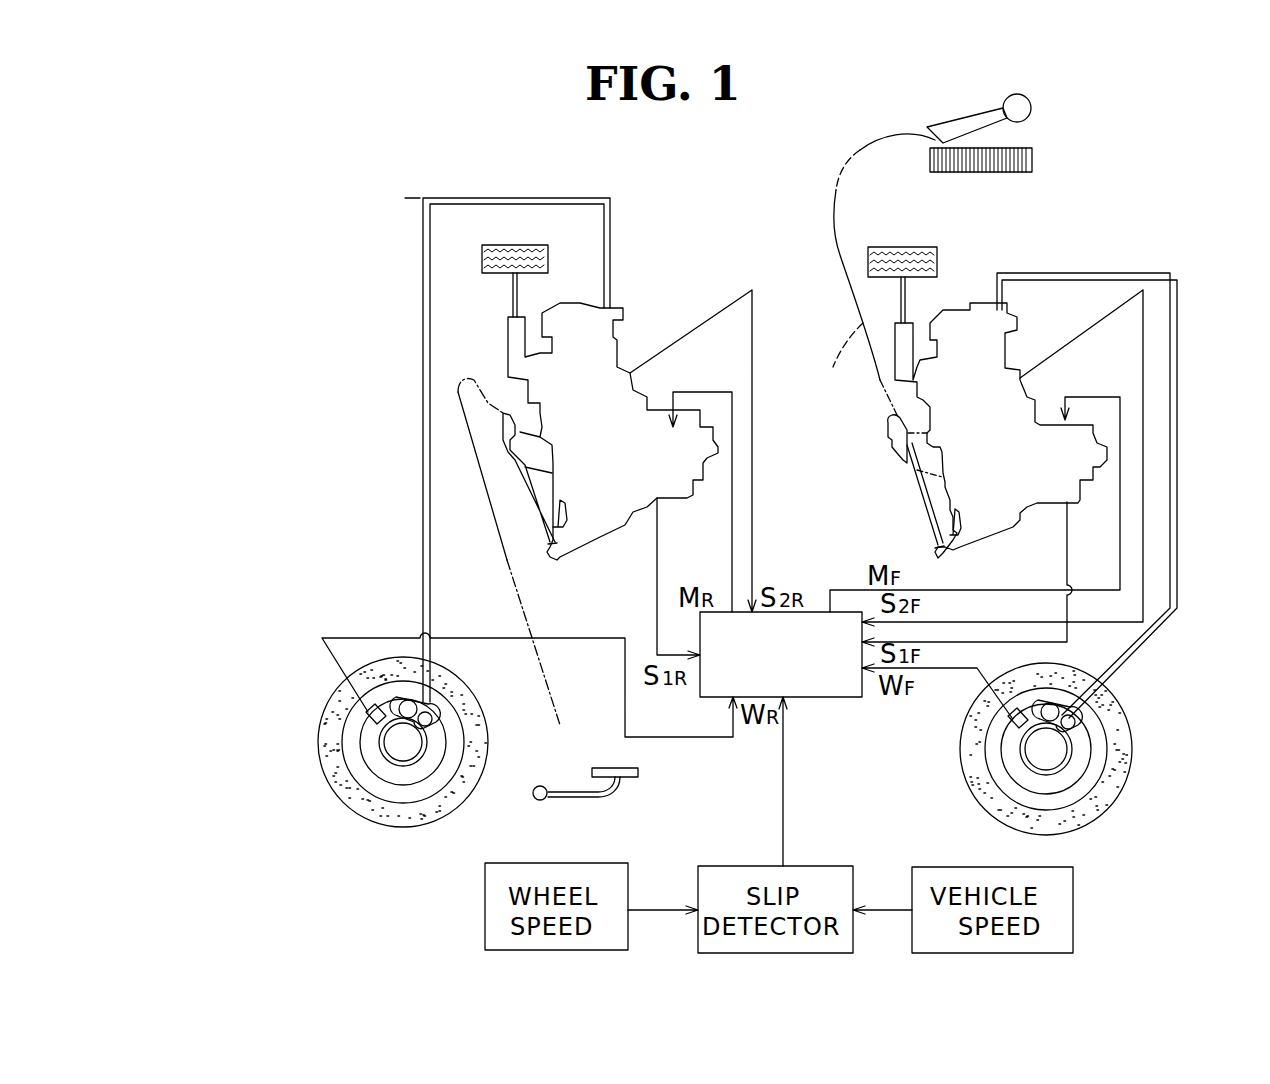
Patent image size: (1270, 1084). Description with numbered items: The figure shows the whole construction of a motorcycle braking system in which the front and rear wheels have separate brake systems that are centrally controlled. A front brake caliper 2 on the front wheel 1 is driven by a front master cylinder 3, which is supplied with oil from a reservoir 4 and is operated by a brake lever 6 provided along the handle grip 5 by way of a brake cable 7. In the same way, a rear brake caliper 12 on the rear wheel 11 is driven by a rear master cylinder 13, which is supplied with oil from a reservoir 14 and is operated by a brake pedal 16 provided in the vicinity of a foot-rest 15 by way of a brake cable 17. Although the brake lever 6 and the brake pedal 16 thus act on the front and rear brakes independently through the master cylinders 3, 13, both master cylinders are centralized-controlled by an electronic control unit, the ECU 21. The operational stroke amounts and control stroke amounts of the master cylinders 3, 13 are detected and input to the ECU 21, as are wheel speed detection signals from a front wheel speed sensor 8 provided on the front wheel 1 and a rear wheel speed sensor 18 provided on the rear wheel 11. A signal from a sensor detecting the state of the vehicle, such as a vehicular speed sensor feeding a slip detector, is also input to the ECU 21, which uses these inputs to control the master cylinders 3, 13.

The front wheel 1 is at (1132, 752).
The front brake caliper 2 is at (1082, 716).
The front master cylinder 3 is at (968, 310).
The reservoir 4 is at (905, 245).
The handle grip 5 is at (1034, 160).
The brake lever 6 is at (1032, 104).
The brake cable 7 is at (833, 367).
The front wheel speed sensor 8 is at (1010, 718).
The rear wheel 11 is at (318, 745).
The rear brake caliper 12 is at (440, 705).
The rear master cylinder 13 is at (580, 305).
The reservoir 14 is at (482, 252).
The foot-rest 15 is at (640, 773).
The brake pedal 16 is at (585, 798).
The brake cable 17 is at (528, 605).
The rear wheel speed sensor 18 is at (368, 714).
The electronic control unit (ECU) 21 is at (798, 698).